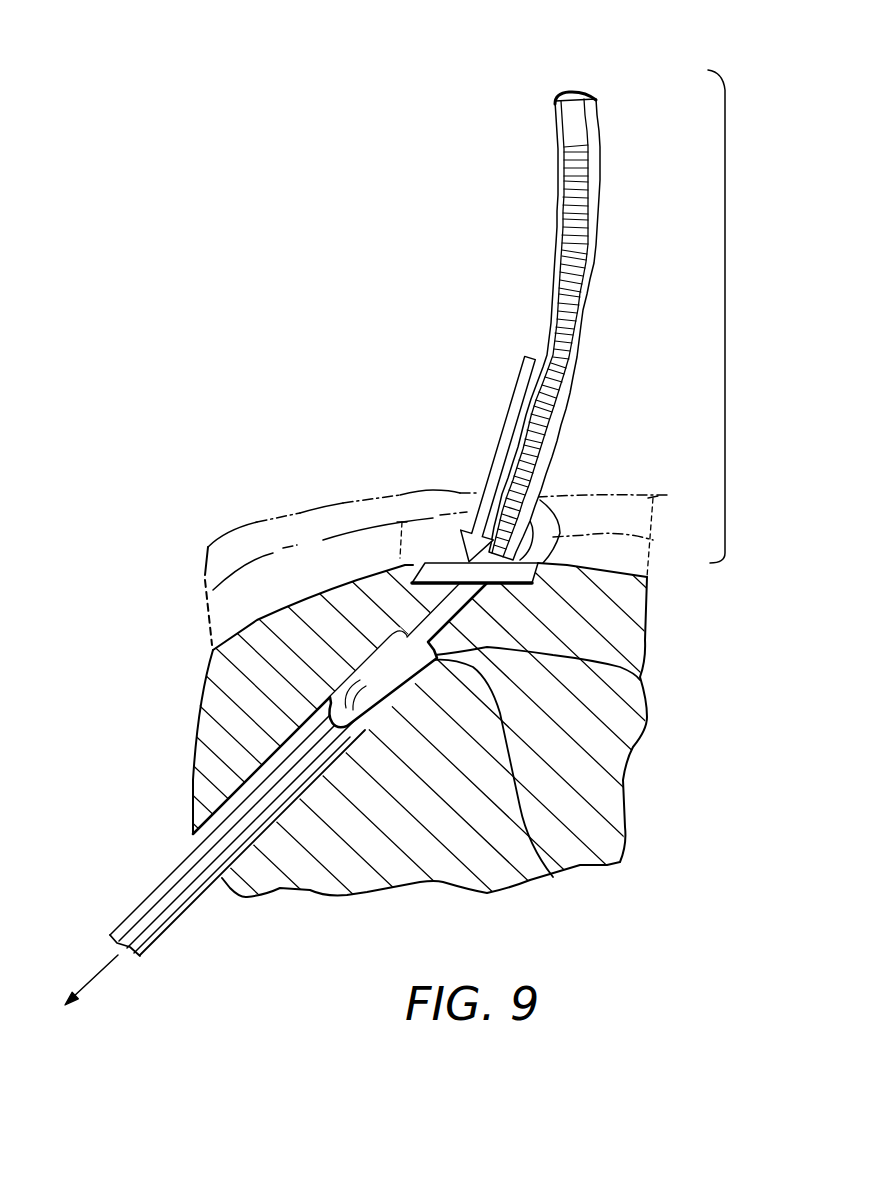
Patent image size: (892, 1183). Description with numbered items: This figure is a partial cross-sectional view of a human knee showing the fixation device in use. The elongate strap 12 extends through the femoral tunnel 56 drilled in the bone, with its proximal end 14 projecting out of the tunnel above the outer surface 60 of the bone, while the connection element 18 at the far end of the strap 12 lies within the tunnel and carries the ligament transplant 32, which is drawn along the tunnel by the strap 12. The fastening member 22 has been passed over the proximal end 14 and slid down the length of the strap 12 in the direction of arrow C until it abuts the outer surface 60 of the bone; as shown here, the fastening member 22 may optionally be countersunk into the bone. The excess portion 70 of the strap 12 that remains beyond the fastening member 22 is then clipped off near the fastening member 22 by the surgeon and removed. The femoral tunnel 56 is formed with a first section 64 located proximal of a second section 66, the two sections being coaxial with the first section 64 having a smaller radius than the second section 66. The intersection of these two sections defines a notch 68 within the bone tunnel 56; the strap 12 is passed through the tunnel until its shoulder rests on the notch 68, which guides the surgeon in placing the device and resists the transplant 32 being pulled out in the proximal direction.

The elongate strap 12 is at (575, 268).
The proximal end 14 is at (574, 92).
The connection element 18 is at (388, 668).
The fastening member 22 is at (520, 560).
The ligament transplant 32 is at (167, 920).
The femoral tunnel 56 is at (230, 873).
The outer surface of the bone 60 is at (613, 570).
The first section 64 is at (643, 687).
The second section 66 is at (323, 787).
The notch 68 is at (555, 881).
The excess portion 70 is at (725, 283).
The arrow C is at (510, 377).